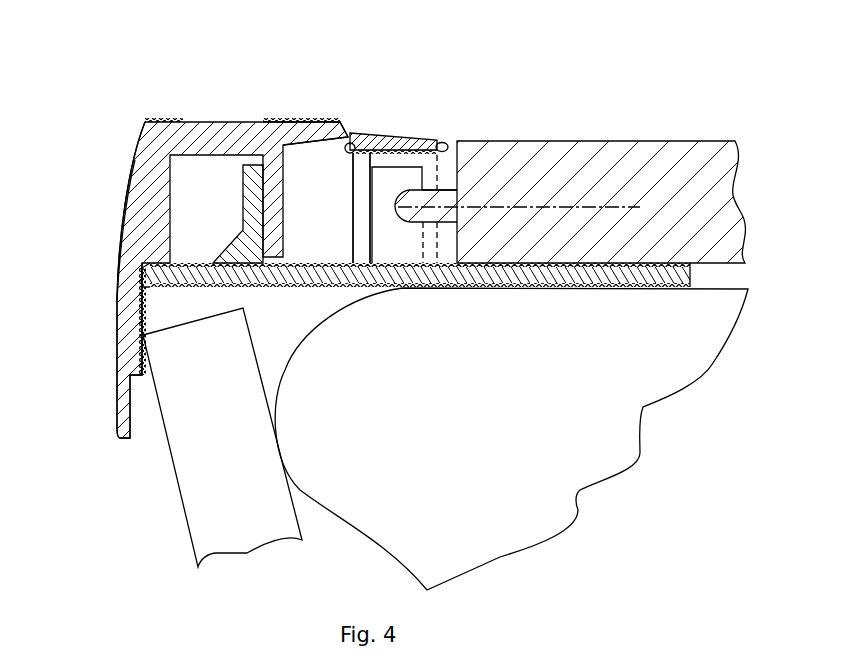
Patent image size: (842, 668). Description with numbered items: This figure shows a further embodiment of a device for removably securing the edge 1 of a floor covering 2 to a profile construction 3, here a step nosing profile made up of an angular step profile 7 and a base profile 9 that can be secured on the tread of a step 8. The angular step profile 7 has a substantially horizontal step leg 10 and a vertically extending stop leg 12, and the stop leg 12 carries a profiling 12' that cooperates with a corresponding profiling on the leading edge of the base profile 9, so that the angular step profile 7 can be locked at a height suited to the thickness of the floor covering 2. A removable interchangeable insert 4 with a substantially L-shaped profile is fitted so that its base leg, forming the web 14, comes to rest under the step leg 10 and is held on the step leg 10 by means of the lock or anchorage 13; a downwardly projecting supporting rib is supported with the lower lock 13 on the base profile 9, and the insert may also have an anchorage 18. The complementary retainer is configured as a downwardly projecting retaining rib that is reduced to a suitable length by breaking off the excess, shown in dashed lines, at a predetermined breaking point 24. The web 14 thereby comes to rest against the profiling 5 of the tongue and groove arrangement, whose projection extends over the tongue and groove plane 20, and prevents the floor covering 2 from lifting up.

The edge of the floor covering 1 is at (541, 233).
The floor covering 2 is at (682, 130).
The profile construction 3 is at (198, 237).
The interchangeable insert 4 is at (385, 203).
The profiling 5 is at (455, 200).
The angular step profile 7 is at (128, 152).
The step 8 is at (521, 498).
The base profile 9 is at (308, 282).
The step leg 10 is at (292, 110).
The stop leg 12 is at (91, 230).
The profiling 12' is at (102, 350).
The lock 13 is at (355, 135).
The web 14 is at (400, 160).
The anchorage 18 is at (444, 142).
The tongue and groove plane 20 is at (637, 209).
The predetermined breaking point 24 is at (447, 198).